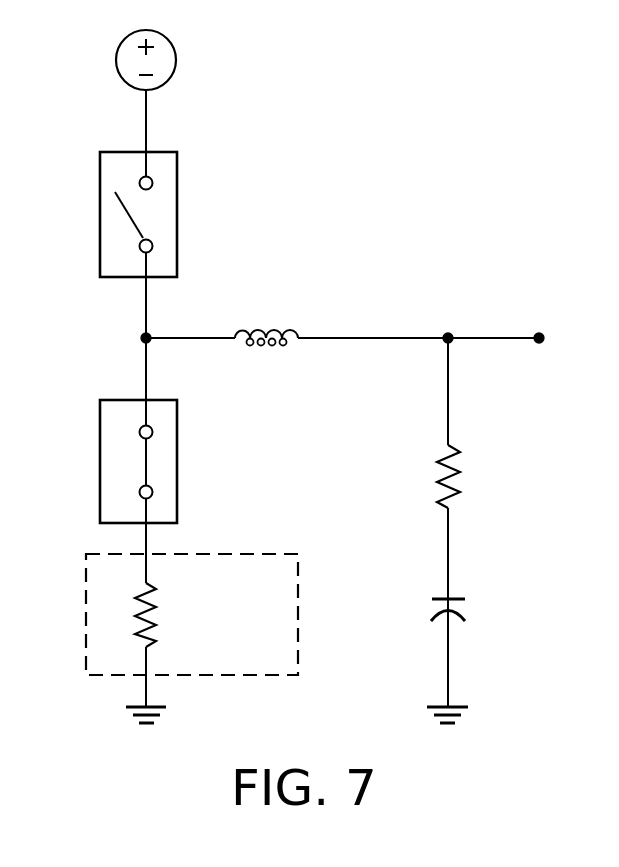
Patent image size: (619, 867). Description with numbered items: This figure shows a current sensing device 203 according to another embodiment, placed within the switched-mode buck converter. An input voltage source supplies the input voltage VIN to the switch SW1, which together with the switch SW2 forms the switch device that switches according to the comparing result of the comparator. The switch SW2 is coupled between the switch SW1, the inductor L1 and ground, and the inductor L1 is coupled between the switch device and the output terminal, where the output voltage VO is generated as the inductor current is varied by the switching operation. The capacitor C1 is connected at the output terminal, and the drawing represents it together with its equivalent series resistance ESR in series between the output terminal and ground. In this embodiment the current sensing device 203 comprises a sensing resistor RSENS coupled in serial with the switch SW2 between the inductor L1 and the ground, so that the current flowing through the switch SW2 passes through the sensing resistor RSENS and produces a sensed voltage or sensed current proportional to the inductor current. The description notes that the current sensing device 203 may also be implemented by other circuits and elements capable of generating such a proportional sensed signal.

The input voltage VIN is at (177, 59).
The switch SW1 is at (177, 213).
The inductor L1 is at (245, 328).
The output voltage VO is at (563, 336).
The switch SW2 is at (177, 460).
The equivalent series resistance ESR is at (461, 482).
The capacitor C1 is at (466, 606).
The sensing resistor RSENS is at (157, 619).
The current sensing device 203 is at (298, 613).